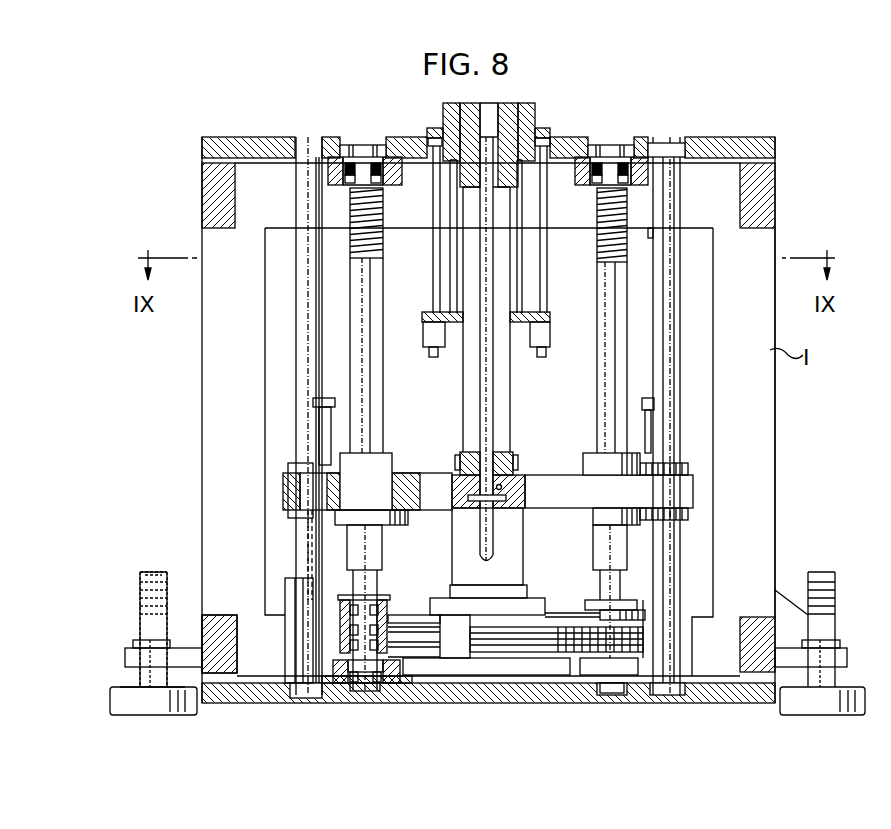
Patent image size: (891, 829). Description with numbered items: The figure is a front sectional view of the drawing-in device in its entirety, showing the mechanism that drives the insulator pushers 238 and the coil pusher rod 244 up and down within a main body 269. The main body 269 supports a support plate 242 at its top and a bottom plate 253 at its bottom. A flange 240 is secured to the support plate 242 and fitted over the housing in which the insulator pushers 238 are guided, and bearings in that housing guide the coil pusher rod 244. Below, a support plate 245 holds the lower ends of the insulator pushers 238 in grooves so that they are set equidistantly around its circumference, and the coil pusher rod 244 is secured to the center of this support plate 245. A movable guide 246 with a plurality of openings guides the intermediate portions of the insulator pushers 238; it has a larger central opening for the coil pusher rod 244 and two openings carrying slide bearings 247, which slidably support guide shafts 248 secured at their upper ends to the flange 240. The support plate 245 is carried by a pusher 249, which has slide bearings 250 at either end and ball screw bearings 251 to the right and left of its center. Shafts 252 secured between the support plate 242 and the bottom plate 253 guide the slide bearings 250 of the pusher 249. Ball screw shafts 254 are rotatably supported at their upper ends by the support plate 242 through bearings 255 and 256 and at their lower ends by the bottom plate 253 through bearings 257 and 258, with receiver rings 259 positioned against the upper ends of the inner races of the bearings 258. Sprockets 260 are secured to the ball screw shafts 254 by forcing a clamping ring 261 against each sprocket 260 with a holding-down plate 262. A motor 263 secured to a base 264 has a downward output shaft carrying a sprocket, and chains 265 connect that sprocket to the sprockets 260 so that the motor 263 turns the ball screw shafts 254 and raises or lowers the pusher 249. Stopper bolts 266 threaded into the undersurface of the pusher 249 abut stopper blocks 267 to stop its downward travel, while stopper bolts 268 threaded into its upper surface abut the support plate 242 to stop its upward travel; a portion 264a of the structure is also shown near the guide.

The insulator pushers 238 is at (462, 424).
The flange 240 is at (560, 152).
The support plate 242 is at (748, 152).
The coil pusher rod 244 is at (492, 198).
The support plate 245 is at (515, 454).
The movable guide 246 is at (527, 313).
The slide bearings 247 is at (546, 350).
The guide shafts 248 is at (544, 268).
The pusher 249 is at (561, 500).
The slide bearings 250 is at (290, 486).
The ball screw bearings 251 is at (398, 526).
The shafts 252 is at (300, 360).
The bottom plate 253 is at (722, 700).
The ball screw shafts 254 is at (355, 300).
The bearing 255 is at (379, 162).
The bearing 256 is at (348, 162).
The bearing 257 is at (410, 684).
The bearing 258 is at (343, 690).
The receiver rings 259 is at (372, 692).
The sprockets 260 is at (386, 613).
The clamping ring 261 is at (340, 608).
The holding-down plate 262 is at (244, 644).
The motor 263 is at (513, 571).
The base 264 is at (457, 643).
The cross bar 264a is at (478, 320).
The chains 265 is at (572, 648).
The stopper bolts 266 is at (300, 540).
The stopper blocks 267 is at (287, 603).
The stopper bolts 268 is at (315, 404).
The main body 269 is at (768, 434).